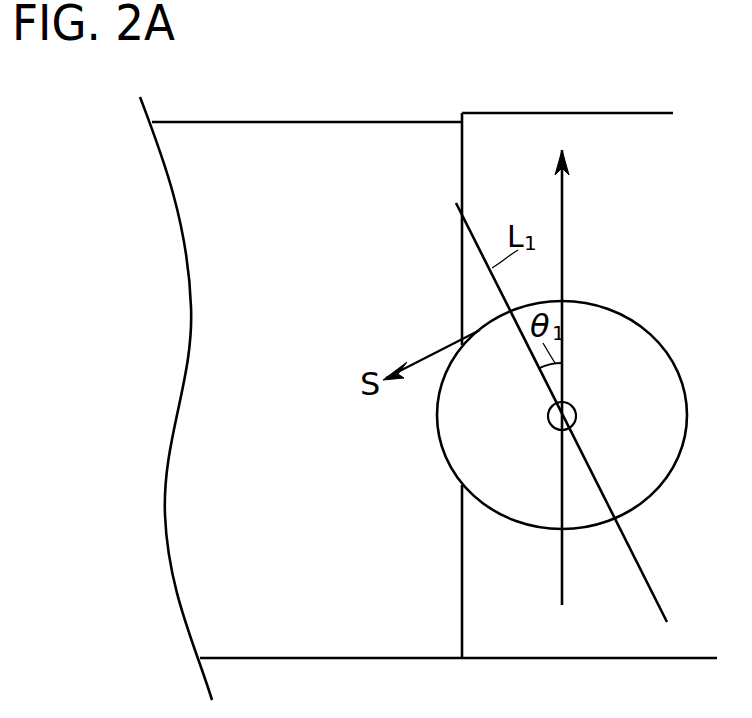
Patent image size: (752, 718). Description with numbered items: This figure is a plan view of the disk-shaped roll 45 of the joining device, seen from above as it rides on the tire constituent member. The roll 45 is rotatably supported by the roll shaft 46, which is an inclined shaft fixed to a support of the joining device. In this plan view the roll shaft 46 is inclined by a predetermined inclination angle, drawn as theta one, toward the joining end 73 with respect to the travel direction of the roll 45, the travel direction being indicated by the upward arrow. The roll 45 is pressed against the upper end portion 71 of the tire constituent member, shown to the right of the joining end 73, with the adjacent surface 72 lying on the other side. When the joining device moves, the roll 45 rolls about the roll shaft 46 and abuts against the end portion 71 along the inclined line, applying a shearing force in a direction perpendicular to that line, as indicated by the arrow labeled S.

The upper end portion 71 is at (535, 123).
The second surface portion of frame 72 is at (347, 129).
The joining end 73 is at (455, 130).
The disk-shaped roll 45 is at (616, 320).
The roll shaft 46 is at (578, 407).